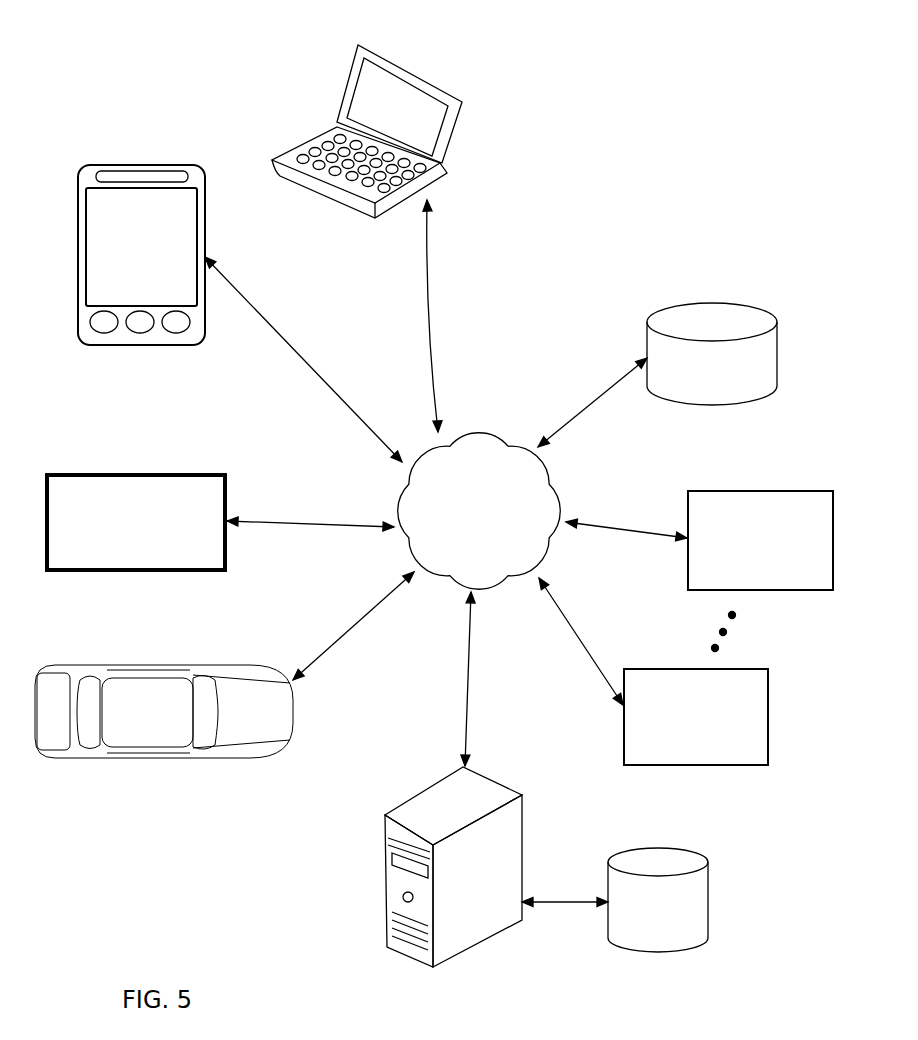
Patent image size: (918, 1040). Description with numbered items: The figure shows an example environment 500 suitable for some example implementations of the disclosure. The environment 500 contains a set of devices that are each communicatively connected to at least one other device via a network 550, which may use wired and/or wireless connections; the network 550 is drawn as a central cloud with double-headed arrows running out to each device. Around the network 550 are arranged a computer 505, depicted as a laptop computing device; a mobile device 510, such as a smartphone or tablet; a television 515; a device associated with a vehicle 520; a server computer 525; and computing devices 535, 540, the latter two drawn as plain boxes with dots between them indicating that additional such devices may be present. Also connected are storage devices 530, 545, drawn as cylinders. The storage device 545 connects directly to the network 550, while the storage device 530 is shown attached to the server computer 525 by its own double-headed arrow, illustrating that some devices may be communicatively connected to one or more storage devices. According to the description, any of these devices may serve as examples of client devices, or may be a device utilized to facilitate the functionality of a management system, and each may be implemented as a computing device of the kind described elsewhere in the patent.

The environment 500 is at (158, 45).
The computer 505 is at (367, 131).
The mobile device 510 is at (141, 255).
The television 515 is at (136, 522).
The device associated with a vehicle 520 is at (164, 711).
The server computer 525 is at (453, 867).
The storage device 530 is at (658, 900).
The computing device 535 is at (696, 689).
The computing device 540 is at (760, 540).
The storage device 545 is at (712, 354).
The network 550 is at (479, 511).